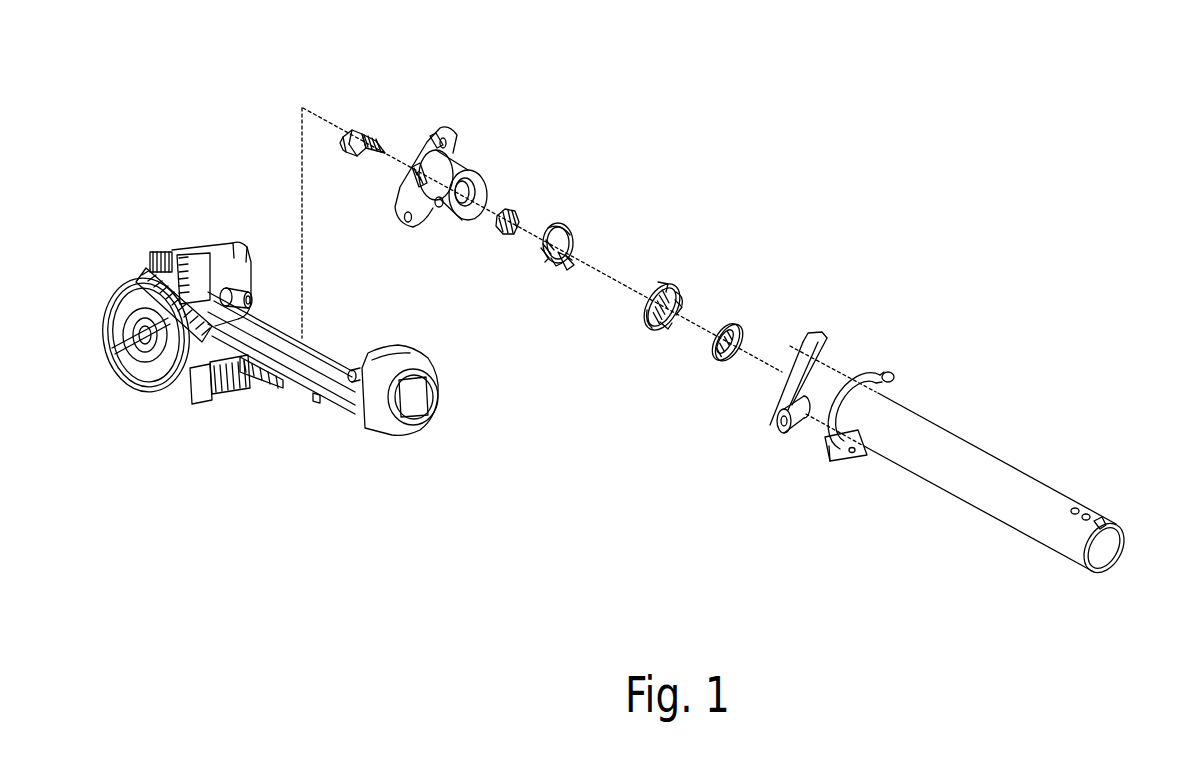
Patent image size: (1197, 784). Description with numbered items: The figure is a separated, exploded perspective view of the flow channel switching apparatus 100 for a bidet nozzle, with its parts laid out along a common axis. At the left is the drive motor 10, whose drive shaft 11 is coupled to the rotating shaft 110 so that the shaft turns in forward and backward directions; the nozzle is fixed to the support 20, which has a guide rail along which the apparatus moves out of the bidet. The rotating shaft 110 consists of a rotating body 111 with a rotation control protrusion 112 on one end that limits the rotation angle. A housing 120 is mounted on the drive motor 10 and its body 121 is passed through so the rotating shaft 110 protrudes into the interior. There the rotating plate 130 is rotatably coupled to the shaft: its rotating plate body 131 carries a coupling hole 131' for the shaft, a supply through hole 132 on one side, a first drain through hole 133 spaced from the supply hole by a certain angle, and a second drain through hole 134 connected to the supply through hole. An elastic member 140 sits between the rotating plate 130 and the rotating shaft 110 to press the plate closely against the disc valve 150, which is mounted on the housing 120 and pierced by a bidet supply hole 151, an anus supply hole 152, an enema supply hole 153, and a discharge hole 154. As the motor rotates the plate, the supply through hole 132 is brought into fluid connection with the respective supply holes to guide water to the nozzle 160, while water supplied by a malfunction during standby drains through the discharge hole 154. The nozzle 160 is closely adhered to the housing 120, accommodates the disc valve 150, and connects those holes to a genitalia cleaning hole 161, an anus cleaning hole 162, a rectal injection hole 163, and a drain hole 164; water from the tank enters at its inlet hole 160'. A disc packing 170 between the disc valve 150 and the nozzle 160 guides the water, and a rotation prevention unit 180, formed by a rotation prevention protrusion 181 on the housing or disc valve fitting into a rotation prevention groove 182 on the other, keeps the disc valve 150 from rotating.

The drive motor 10 is at (213, 243).
The drive shaft 11 is at (253, 293).
The support 20 is at (296, 380).
The flow channel switching apparatus 100 is at (832, 230).
The rotating shaft 110 is at (355, 122).
The rotating body 111 is at (370, 128).
The rotation control protrusion 112 is at (345, 150).
The housing 120 is at (450, 122).
The body 121 is at (432, 142).
The rotating plate 130 is at (555, 216).
The rotating plate body 131 is at (572, 208).
The coupling hole 131' is at (597, 237).
The supply through hole 132 is at (548, 258).
The first drain through hole 133 is at (565, 258).
The second drain through hole 134 is at (556, 263).
The elastic member 140 is at (506, 237).
The disc valve 150 is at (675, 272).
The bidet supply hole 151 is at (685, 300).
The anus supply hole 152 is at (650, 318).
The enema supply hole 153 is at (665, 330).
The discharge hole 154 is at (690, 310).
The nozzle 160 is at (961, 463).
The inlet hole 160' is at (787, 423).
The genitalia cleaning hole 161 is at (1075, 508).
The anus cleaning hole 162 is at (1089, 514).
The rectal injection hole 163 is at (1102, 522).
The drain hole 164 is at (888, 372).
The disc packing 170 is at (726, 362).
The rotation prevention unit 180 is at (485, 180).
The rotation prevention protrusion 181 is at (470, 183).
The rotation prevention groove 182 is at (663, 288).